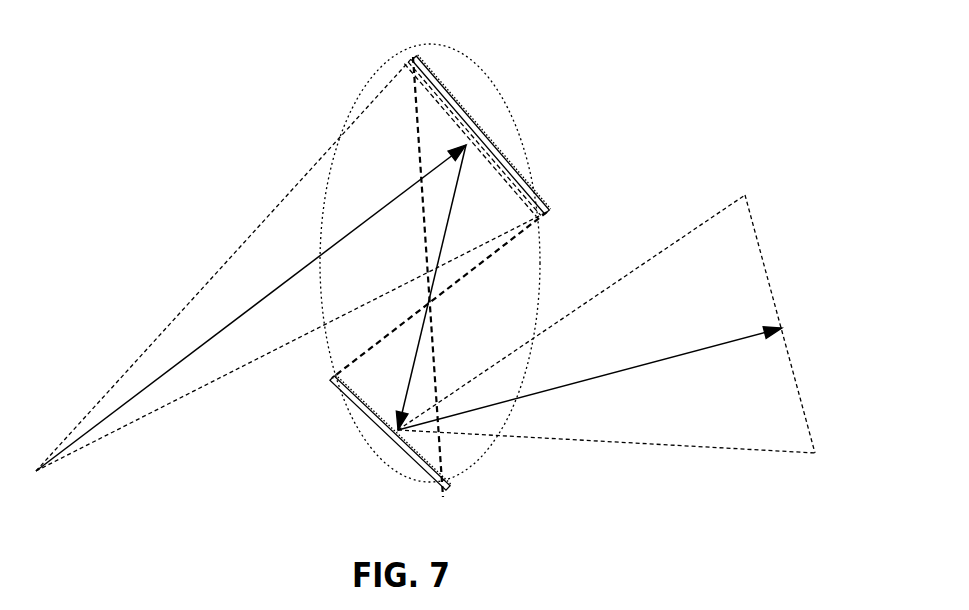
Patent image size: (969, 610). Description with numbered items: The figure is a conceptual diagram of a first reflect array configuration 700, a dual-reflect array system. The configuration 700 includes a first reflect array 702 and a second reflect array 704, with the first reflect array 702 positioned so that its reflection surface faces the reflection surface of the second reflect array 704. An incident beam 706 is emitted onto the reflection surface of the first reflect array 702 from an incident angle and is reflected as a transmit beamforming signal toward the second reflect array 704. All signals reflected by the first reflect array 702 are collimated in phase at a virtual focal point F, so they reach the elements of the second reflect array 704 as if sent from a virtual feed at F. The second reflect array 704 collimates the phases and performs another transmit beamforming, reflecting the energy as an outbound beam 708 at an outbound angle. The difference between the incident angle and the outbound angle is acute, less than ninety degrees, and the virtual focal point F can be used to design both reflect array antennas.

The first reflect array configuration 700 is at (810, 53).
The first reflect array 702 is at (538, 199).
The second reflect array 704 is at (446, 496).
The incident beam 706 is at (190, 353).
The outbound beam 708 is at (740, 340).